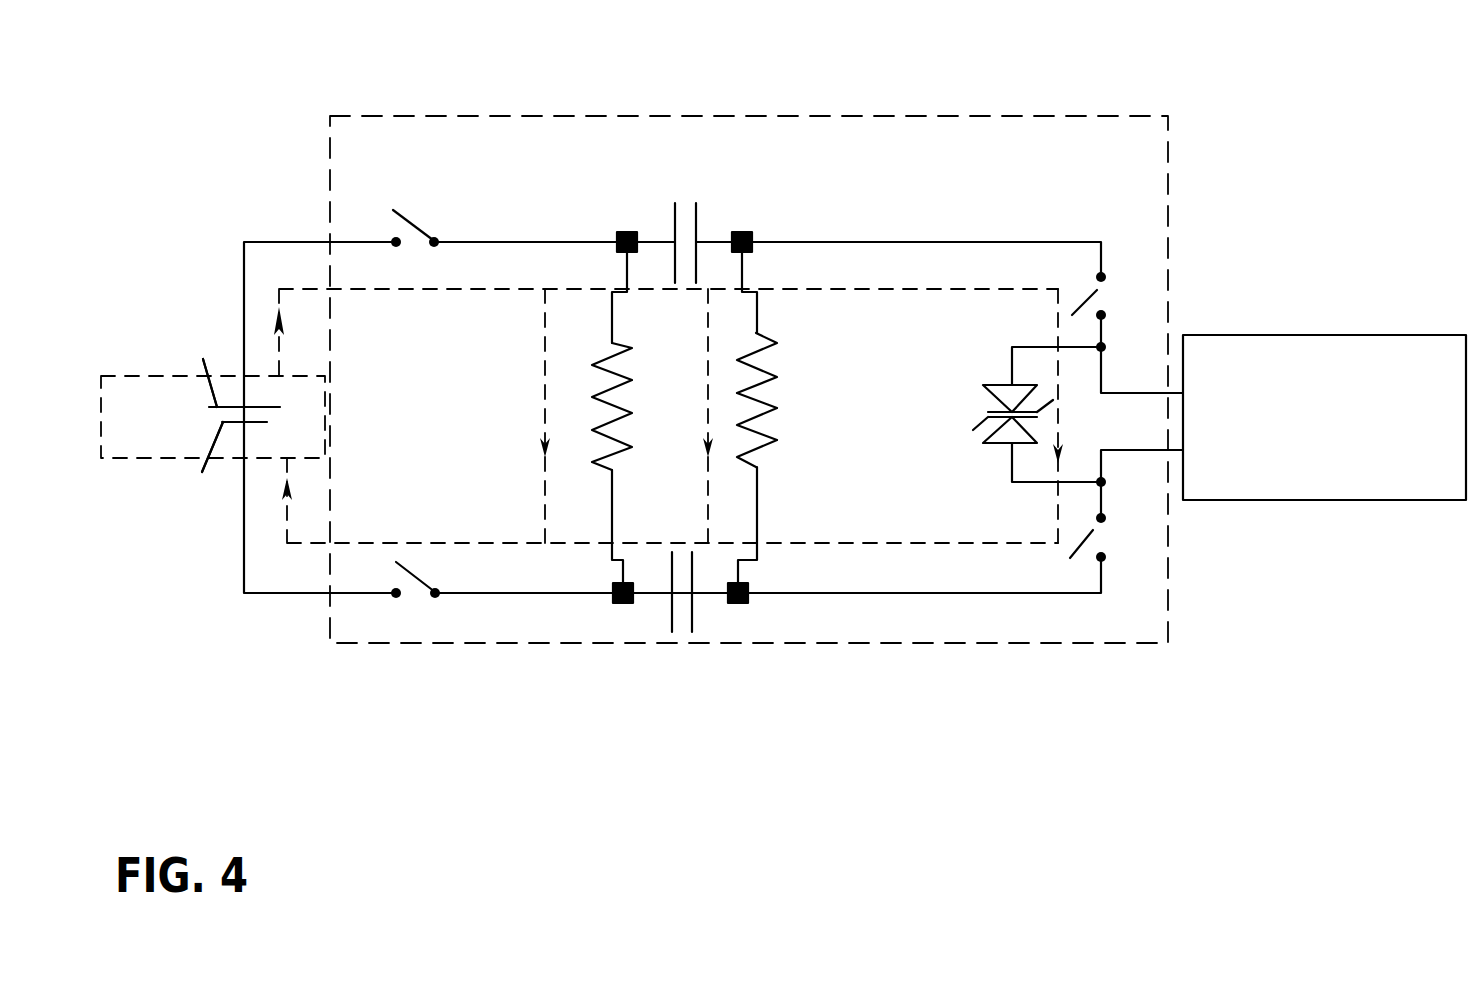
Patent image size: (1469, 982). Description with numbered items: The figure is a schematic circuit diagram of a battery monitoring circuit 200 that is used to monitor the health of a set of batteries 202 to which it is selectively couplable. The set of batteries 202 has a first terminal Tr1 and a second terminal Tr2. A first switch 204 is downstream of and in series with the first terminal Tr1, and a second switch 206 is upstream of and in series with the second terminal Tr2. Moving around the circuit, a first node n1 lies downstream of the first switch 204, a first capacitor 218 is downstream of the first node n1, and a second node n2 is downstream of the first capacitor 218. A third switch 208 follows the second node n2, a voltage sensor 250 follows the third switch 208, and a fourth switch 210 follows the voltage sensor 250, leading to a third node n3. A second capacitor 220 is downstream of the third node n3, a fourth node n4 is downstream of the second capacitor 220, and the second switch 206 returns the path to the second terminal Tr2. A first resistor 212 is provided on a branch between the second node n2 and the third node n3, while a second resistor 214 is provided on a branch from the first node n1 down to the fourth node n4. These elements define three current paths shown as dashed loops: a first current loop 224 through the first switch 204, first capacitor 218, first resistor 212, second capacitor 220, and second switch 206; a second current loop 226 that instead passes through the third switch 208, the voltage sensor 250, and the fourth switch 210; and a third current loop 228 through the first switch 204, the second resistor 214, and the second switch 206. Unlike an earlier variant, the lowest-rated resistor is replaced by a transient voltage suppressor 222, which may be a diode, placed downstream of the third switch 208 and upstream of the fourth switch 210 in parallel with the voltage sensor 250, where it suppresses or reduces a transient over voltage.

The battery monitoring circuit 200 is at (880, 115).
The set of batteries 202 is at (142, 373).
The first switch 204 is at (418, 227).
The second switch 206 is at (415, 578).
The third switch 208 is at (1093, 292).
The fourth switch 210 is at (1088, 535).
The first resistor 212 is at (770, 380).
The second resistor 214 is at (625, 383).
The first capacitor 218 is at (697, 218).
The second capacitor 220 is at (692, 610).
The transient voltage suppressor 222 is at (1005, 387).
The first current loop 224 is at (707, 370).
The second current loop 226 is at (1055, 500).
The third current loop 228 is at (540, 393).
The voltage sensor 250 is at (1355, 500).
The first node n1 is at (618, 232).
The second node n2 is at (750, 233).
The third node n3 is at (743, 600).
The fourth node n4 is at (618, 602).
The first terminal Tr1 is at (204, 373).
The second terminal Tr2 is at (201, 464).